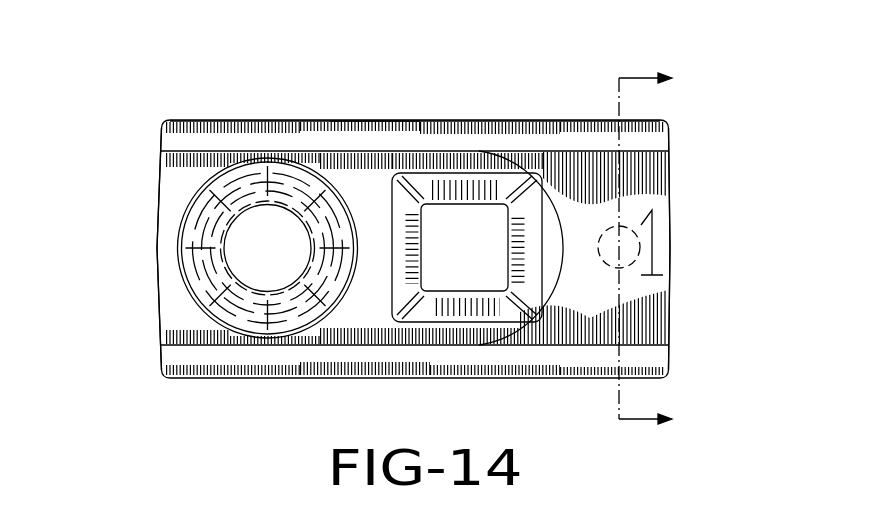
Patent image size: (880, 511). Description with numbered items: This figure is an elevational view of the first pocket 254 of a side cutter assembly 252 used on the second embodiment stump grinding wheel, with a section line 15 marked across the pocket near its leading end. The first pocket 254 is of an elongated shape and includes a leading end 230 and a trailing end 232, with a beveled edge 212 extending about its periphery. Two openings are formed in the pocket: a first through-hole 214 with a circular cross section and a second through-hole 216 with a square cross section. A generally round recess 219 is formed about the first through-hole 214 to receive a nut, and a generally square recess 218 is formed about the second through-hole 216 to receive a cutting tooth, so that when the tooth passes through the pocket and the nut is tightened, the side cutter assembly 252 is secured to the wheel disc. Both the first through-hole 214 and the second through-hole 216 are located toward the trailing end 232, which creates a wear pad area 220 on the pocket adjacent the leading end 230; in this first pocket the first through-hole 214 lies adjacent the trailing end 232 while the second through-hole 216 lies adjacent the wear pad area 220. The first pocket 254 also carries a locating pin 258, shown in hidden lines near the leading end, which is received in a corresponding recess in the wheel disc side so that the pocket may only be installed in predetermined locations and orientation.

The beveled edge 212 is at (278, 150).
The first through-hole 214 is at (234, 228).
The second through-hole 216 is at (488, 291).
The square recess 218 is at (448, 182).
The round recess 219 is at (239, 315).
The wear pad area 220 is at (577, 200).
The leading end 230 is at (672, 200).
The trailing end 232 is at (157, 290).
The side cutter assembly 252 is at (204, 114).
The first pocket 254 is at (362, 121).
The locating pin 258 is at (605, 265).
The section line 15- 15 is at (665, 249).